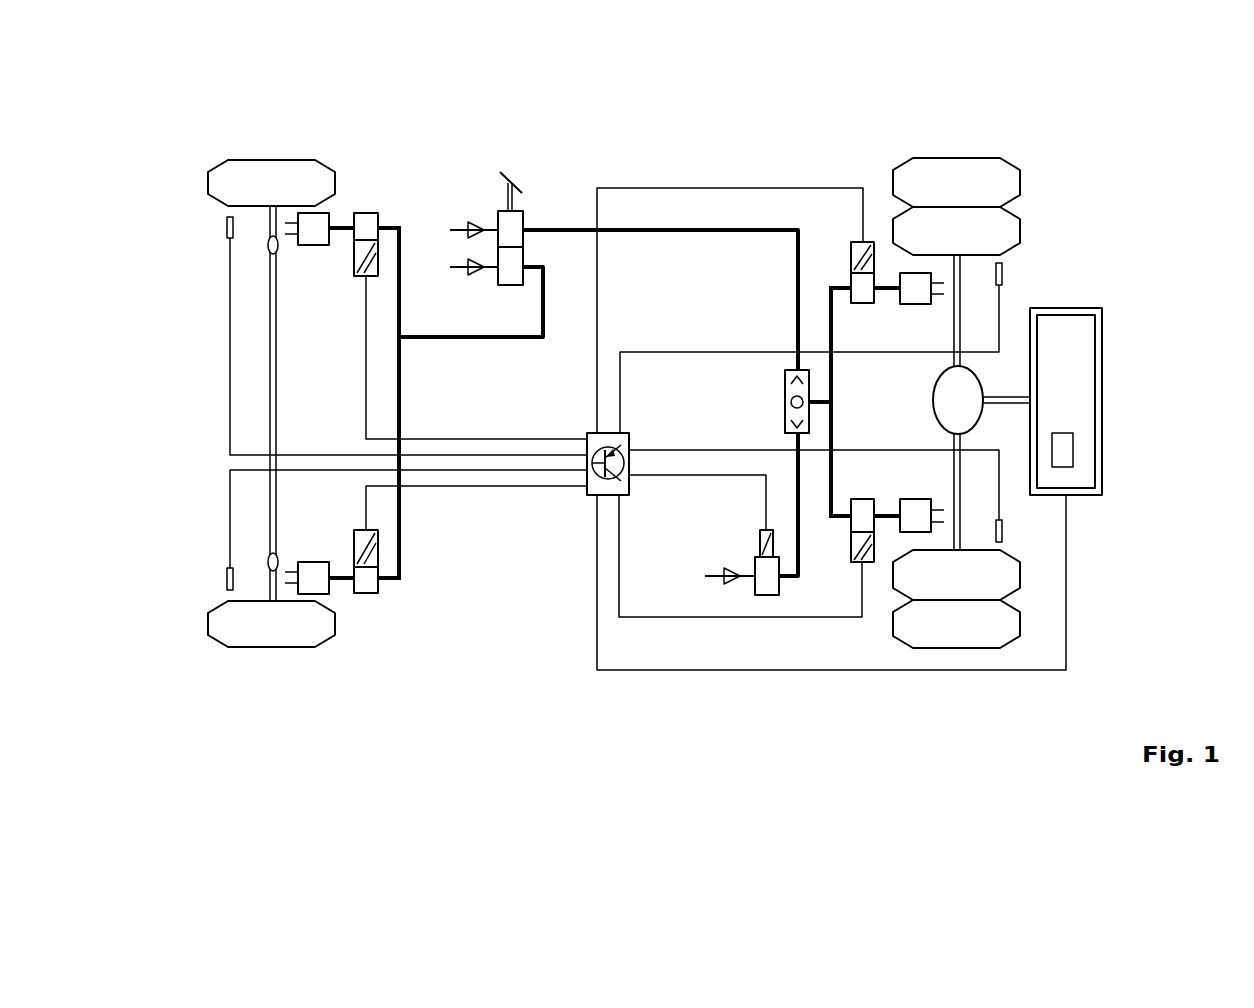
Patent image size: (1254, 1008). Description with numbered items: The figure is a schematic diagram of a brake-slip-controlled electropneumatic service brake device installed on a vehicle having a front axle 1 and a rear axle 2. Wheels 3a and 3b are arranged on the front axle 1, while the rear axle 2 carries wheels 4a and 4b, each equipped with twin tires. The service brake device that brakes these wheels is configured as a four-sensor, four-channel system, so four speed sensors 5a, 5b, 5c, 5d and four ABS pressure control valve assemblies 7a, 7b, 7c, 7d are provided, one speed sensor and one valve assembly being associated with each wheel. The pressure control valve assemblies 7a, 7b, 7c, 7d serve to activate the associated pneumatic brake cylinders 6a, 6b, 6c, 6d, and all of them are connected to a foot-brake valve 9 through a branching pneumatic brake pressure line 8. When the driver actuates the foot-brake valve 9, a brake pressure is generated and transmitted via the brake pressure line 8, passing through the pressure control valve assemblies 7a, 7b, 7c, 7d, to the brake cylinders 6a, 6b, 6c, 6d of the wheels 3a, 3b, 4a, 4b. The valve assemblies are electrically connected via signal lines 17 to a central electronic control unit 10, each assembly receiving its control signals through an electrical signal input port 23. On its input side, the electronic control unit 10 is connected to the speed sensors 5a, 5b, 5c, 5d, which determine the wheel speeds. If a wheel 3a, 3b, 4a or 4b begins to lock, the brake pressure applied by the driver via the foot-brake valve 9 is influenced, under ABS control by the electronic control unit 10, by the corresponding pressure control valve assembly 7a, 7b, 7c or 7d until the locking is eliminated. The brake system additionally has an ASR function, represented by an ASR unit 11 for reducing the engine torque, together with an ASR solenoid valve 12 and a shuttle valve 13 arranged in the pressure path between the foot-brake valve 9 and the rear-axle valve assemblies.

The front axle 1 is at (279, 138).
The rear axle 2 is at (963, 138).
The wheel 3a is at (208, 176).
The wheel 3b is at (208, 621).
The wheel 4a is at (1020, 178).
The wheel 4b is at (1020, 620).
The speed sensor 5a is at (227, 225).
The speed sensor 5b is at (227, 578).
The speed sensor 5c is at (1002, 270).
The speed sensor 5d is at (1002, 525).
The pneumatic brake cylinder 6a is at (314, 245).
The pneumatic brake cylinder 6b is at (313, 562).
The pneumatic brake cylinder 6c is at (917, 305).
The pneumatic brake cylinder 6d is at (917, 499).
The ABS pressure control valve assembly 7a is at (366, 213).
The ABS pressure control valve assembly 7b is at (366, 593).
The ABS pressure control valve assembly 7c is at (862, 303).
The ABS pressure control valve assembly 7d is at (864, 499).
The pneumatic brake pressure line 8 is at (683, 232).
The foot-brake valve 9 is at (498, 222).
The electronic control unit 10 is at (622, 441).
The ASR unit 11 is at (1073, 400).
The ASR solenoid valve 12 is at (760, 567).
The shuttle valve 13 is at (786, 407).
The signal line 17 is at (757, 188).
The electrical signal input port 23 is at (378, 268).